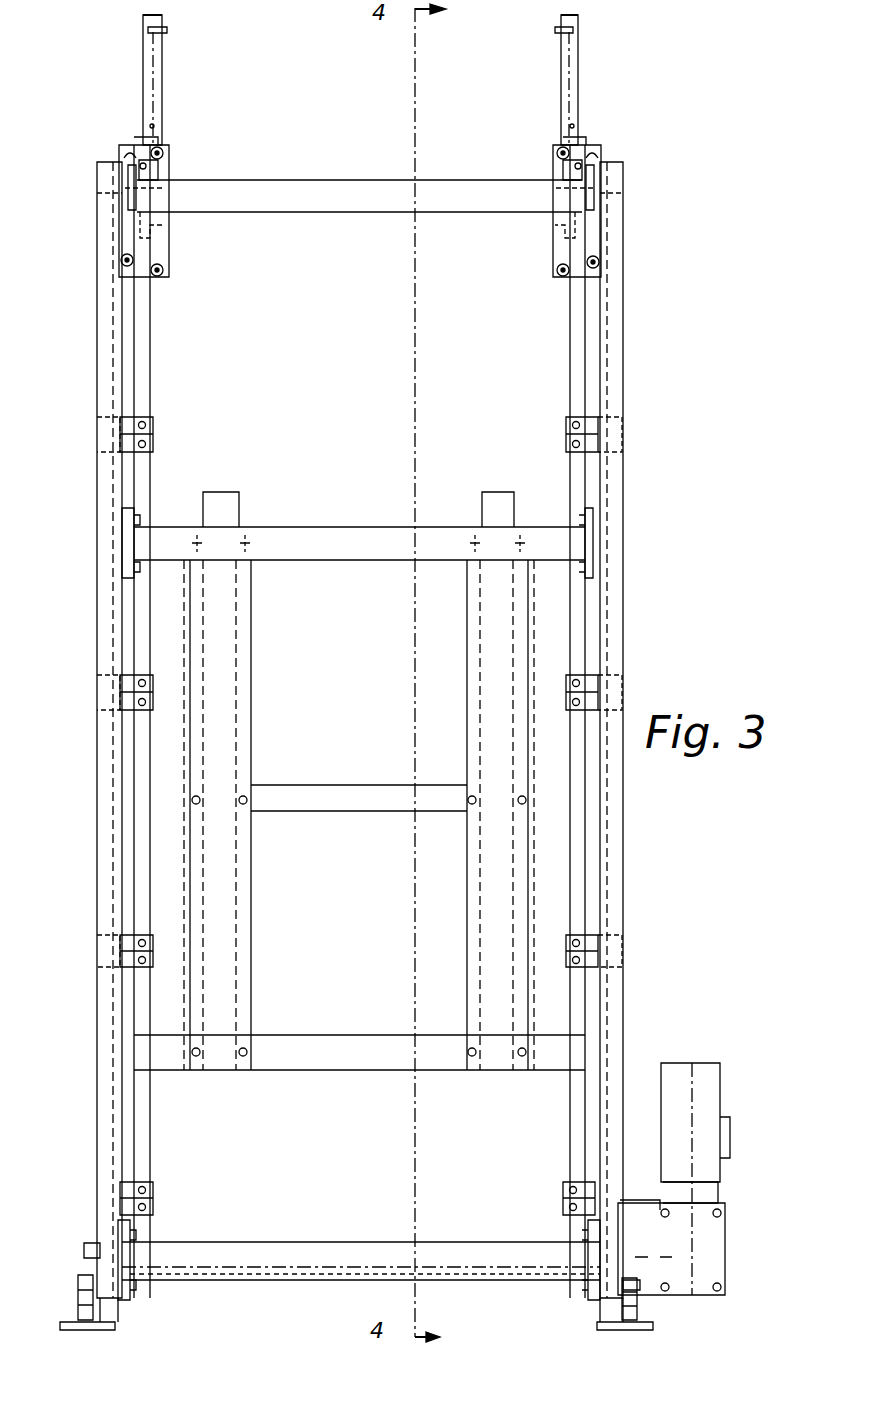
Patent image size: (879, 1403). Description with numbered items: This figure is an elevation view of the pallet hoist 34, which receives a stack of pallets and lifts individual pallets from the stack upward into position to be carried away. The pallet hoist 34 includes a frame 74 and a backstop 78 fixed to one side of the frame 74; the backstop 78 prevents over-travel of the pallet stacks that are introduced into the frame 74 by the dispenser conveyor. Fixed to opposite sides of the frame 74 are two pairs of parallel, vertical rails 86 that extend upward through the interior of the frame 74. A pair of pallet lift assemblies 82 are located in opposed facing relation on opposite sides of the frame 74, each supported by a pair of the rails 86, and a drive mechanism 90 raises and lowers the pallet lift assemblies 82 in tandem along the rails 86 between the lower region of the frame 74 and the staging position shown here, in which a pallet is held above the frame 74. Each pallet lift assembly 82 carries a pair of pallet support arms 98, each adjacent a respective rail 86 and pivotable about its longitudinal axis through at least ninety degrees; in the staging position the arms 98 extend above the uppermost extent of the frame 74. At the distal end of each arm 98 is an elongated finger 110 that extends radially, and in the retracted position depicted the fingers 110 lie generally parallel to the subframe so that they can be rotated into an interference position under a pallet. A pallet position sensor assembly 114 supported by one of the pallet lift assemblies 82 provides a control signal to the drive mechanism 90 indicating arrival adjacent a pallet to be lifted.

The pallet hoist 34 is at (633, 403).
The frame 74 is at (622, 638).
The backstop 78 is at (362, 527).
The pallet lift assembly 82 is at (180, 174).
The vertical rail 86 is at (148, 385).
The drive mechanism 90 is at (672, 1054).
The pallet support arm 98 is at (160, 110).
The finger 110 is at (163, 28).
The pallet position sensor assembly 114 is at (578, 22).